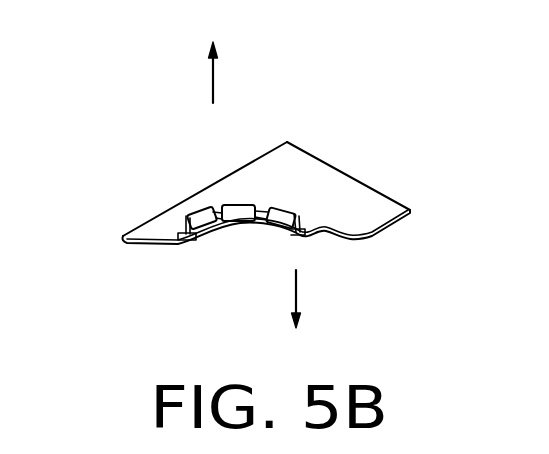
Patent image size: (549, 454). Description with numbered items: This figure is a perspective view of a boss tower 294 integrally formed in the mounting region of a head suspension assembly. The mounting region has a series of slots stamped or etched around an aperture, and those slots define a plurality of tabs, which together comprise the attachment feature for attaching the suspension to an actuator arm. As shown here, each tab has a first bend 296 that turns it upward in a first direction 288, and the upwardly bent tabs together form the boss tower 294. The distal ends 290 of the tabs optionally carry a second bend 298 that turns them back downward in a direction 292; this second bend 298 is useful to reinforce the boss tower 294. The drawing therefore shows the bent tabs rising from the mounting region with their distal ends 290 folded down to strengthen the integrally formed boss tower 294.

The first direction 288 is at (213, 85).
The distal ends 290 is at (197, 233).
The direction 292 is at (296, 292).
The boss tower 294 is at (294, 208).
The first bend 296 is at (168, 245).
The second bend 298 is at (183, 227).